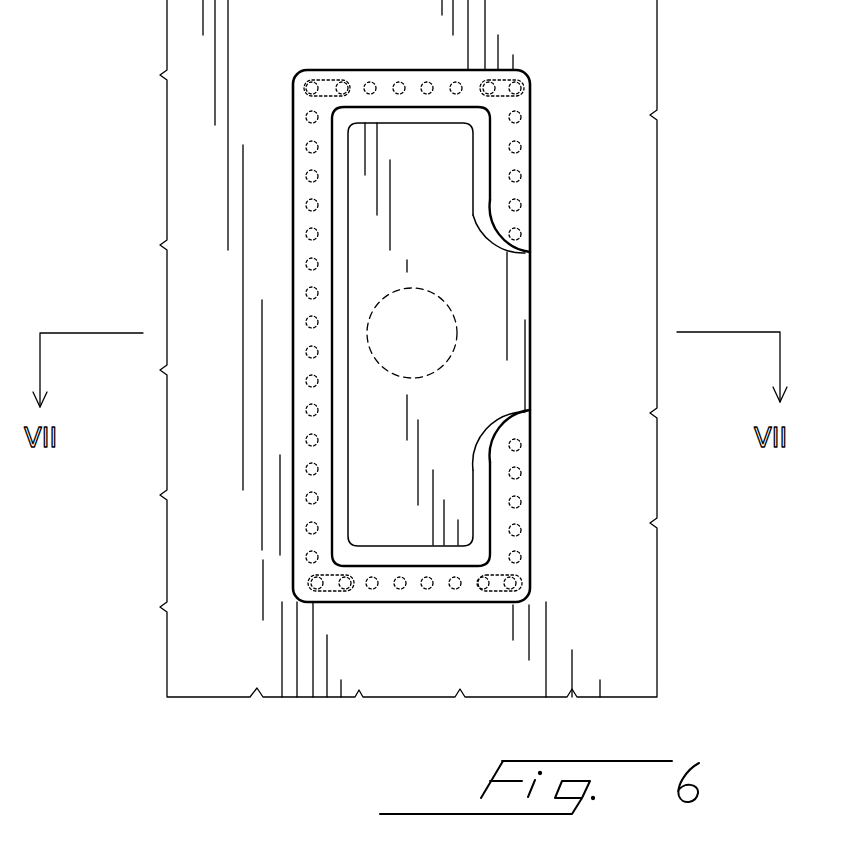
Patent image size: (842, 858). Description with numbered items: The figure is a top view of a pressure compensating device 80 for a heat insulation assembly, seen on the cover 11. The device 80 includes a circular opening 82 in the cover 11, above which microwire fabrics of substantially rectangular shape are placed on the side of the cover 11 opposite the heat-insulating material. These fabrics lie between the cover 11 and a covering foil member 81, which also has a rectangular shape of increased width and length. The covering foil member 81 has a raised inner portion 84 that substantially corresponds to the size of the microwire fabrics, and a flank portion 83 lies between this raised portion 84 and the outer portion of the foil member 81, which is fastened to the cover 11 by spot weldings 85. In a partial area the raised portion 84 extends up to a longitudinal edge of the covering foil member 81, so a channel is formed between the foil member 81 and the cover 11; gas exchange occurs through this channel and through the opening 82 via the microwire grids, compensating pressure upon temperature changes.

The cover 11 is at (598, 51).
The pressure compensating device 80 is at (282, 250).
The covering foil member 81 is at (508, 152).
The opening 82 is at (440, 340).
The flank portion 83 is at (405, 110).
The raised inner portion 84 is at (524, 272).
The spot weldings 85 is at (520, 552).